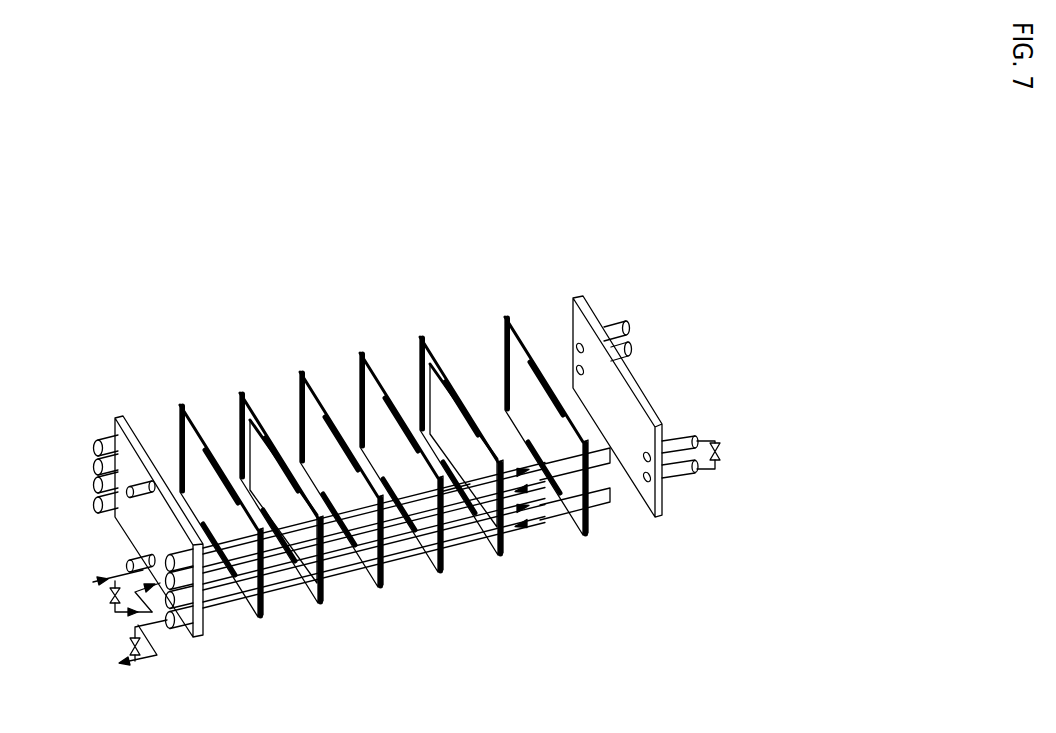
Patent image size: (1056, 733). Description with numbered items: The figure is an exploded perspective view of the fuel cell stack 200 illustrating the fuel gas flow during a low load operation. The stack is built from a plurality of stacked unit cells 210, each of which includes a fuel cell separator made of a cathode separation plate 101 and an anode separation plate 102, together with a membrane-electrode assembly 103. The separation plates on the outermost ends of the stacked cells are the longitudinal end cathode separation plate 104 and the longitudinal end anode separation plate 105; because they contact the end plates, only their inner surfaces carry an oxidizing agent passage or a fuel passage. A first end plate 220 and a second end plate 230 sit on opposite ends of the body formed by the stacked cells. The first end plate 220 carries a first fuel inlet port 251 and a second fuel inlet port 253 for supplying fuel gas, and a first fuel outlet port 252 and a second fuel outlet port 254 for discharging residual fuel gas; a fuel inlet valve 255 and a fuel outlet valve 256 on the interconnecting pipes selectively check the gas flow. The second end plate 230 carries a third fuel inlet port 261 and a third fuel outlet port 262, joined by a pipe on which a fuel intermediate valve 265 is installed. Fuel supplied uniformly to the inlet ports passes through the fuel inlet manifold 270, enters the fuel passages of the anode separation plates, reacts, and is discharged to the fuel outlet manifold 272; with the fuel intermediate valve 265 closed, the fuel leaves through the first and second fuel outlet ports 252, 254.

The fuel cell stack 200 is at (358, 261).
The unit cell 210 is at (413, 305).
The cathode separation plate 101 is at (300, 371).
The anode separation plate 102 is at (360, 352).
The membrane-electrode assembly 103 is at (240, 392).
The longitudinal end cathode separation plate 104 is at (505, 316).
The longitudinal end anode separation plate 105 is at (180, 403).
The first end plate 220 is at (114, 413).
The second end plate 230 is at (572, 292).
The first fuel inlet port 251 is at (204, 572).
The first fuel outlet port 252 is at (204, 588).
The second fuel inlet port 253 is at (204, 605).
The second fuel outlet port 254 is at (204, 623).
The fuel inlet valve 255 is at (110, 598).
The fuel outlet valve 256 is at (130, 646).
The third fuel inlet port 261 is at (688, 478).
The third fuel outlet port 262 is at (688, 437).
The fuel intermediate valve 265 is at (717, 462).
The fuel inlet manifold 270 is at (533, 507).
The fuel outlet manifold 272 is at (472, 510).